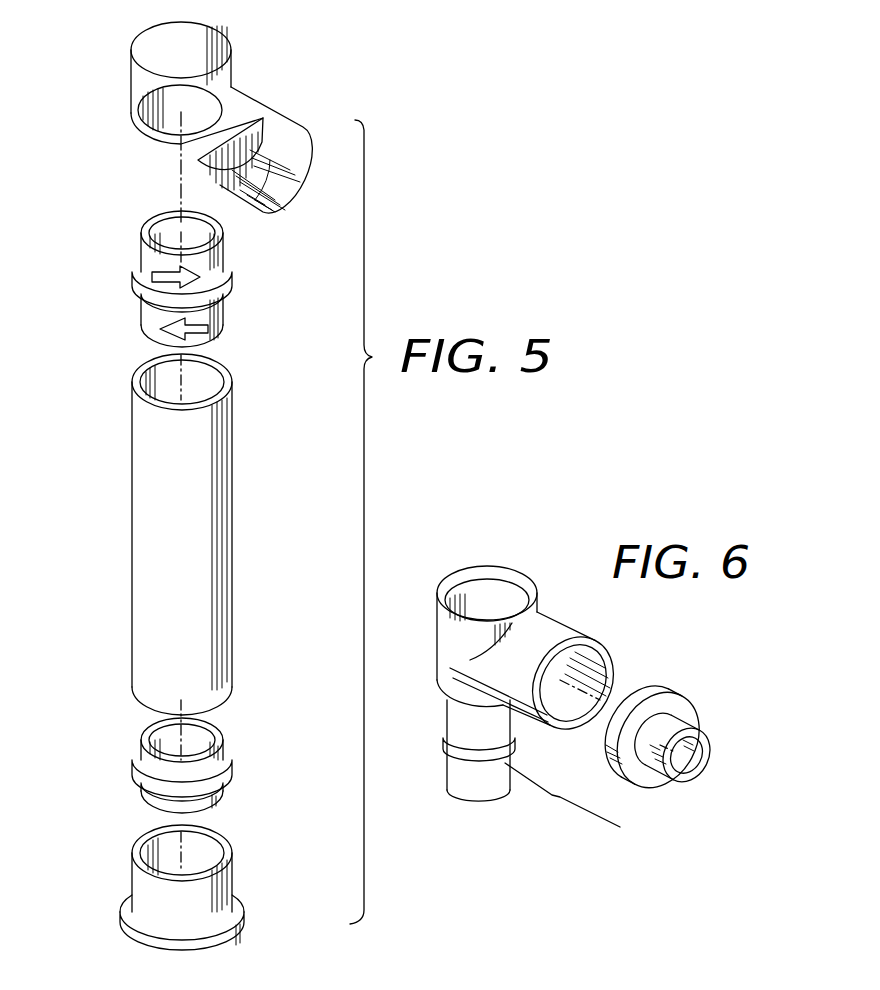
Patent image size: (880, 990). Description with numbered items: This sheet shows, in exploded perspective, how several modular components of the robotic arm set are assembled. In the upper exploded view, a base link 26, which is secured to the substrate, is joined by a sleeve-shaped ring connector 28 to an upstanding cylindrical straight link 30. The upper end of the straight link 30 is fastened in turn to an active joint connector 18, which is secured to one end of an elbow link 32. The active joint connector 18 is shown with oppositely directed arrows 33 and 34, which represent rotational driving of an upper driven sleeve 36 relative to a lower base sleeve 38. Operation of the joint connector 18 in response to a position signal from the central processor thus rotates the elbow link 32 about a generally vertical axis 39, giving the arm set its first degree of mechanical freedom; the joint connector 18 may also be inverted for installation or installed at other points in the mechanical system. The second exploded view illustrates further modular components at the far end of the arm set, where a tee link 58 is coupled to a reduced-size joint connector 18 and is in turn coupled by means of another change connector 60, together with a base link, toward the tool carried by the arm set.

In FIG. 5, the active joint connector 18 is at (150, 267).
In FIG. 6, the active joint connector 18 is at (447, 775).
In FIG. 5, the base link 26 is at (233, 862).
In FIG. 5, the ring connector 28 is at (233, 768).
In FIG. 5, the straight link 30 is at (150, 562).
In FIG. 5, the elbow link 32 is at (212, 62).
In FIG. 5, the arrow 33 is at (208, 333).
In FIG. 5, the arrow 34 is at (202, 274).
In FIG. 5, the upper driven sleeve 36 is at (150, 230).
In FIG. 5, the lower base sleeve 38 is at (140, 308).
In FIG. 5, the vertical axis 39 is at (180, 157).
In FIG. 6, the tee link 58 is at (543, 620).
In FIG. 6, the change connector 60 is at (648, 773).